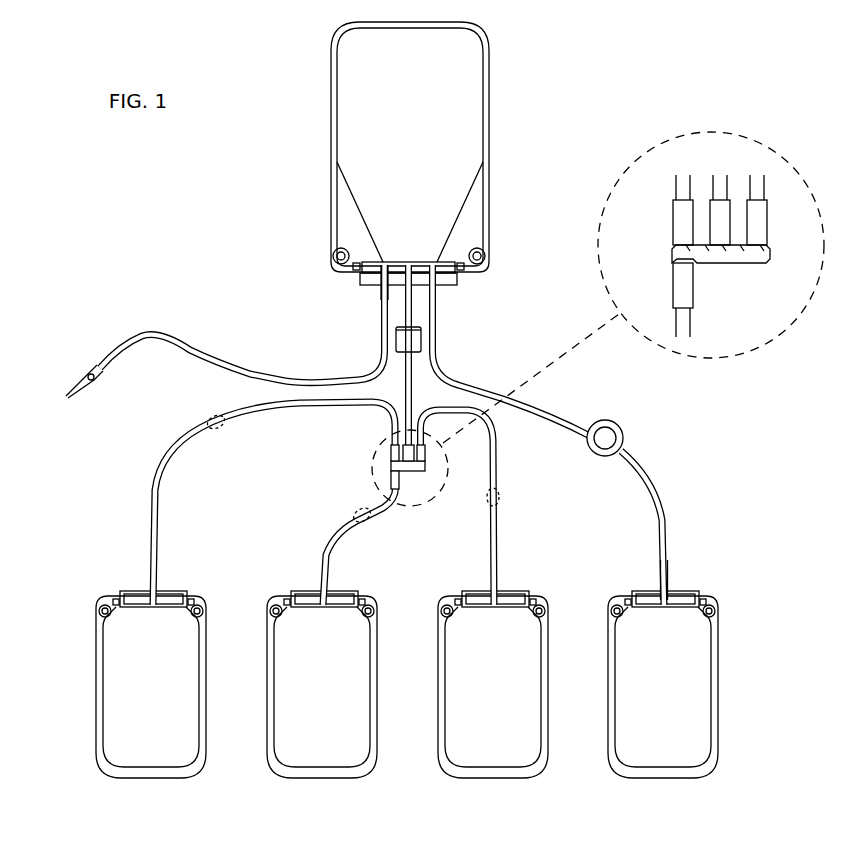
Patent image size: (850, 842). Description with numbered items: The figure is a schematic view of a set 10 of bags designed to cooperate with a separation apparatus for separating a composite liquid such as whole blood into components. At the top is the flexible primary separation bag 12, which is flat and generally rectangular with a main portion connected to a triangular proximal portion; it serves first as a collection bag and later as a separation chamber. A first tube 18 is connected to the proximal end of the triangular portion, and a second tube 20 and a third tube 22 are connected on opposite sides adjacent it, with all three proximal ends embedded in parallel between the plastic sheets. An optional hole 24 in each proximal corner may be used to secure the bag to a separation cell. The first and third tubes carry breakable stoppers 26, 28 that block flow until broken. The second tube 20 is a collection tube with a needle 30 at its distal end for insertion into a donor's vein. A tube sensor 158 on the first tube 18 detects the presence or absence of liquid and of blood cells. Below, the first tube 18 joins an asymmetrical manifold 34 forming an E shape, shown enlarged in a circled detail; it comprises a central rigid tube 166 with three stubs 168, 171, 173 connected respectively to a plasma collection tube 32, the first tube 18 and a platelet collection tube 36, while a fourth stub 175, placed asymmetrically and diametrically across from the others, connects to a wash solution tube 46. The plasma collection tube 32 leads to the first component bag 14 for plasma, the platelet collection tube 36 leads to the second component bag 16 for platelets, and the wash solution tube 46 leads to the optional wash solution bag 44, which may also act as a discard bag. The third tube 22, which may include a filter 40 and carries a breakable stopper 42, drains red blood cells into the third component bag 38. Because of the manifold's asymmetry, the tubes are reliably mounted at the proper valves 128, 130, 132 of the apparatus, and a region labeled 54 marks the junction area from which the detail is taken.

The set of bags 10 is at (218, 253).
The primary separation bag 12 is at (333, 83).
The first component bag 14 is at (134, 592).
The second component bag 16 is at (478, 592).
The first tube 18 is at (404, 376).
The second tube 20 is at (293, 377).
The third tube 22 is at (656, 508).
The hole 24 is at (336, 251).
The breakable stopper 26 is at (400, 296).
The breakable stopper 28 is at (437, 300).
The needle 30 is at (92, 380).
The plasma collection tube 32 is at (158, 493).
The asymmetrical manifold 34 is at (633, 210).
The platelet collection tube 36 is at (490, 522).
The third component bag 38 is at (646, 592).
The filter 40 is at (620, 425).
The breakable stopper 42 is at (670, 575).
The wash solution bag 44 is at (308, 592).
The wash solution tube 46 is at (322, 542).
The junction 54 is at (412, 496).
The valve 128 is at (226, 430).
The valve 130 is at (358, 508).
The valve 132 is at (501, 496).
The tube sensor 158 is at (421, 340).
The central rigid tube 166 is at (770, 260).
The stub 168 is at (675, 222).
The stub 171 is at (710, 213).
The stub 173 is at (767, 223).
The fourth stub 175 is at (696, 290).